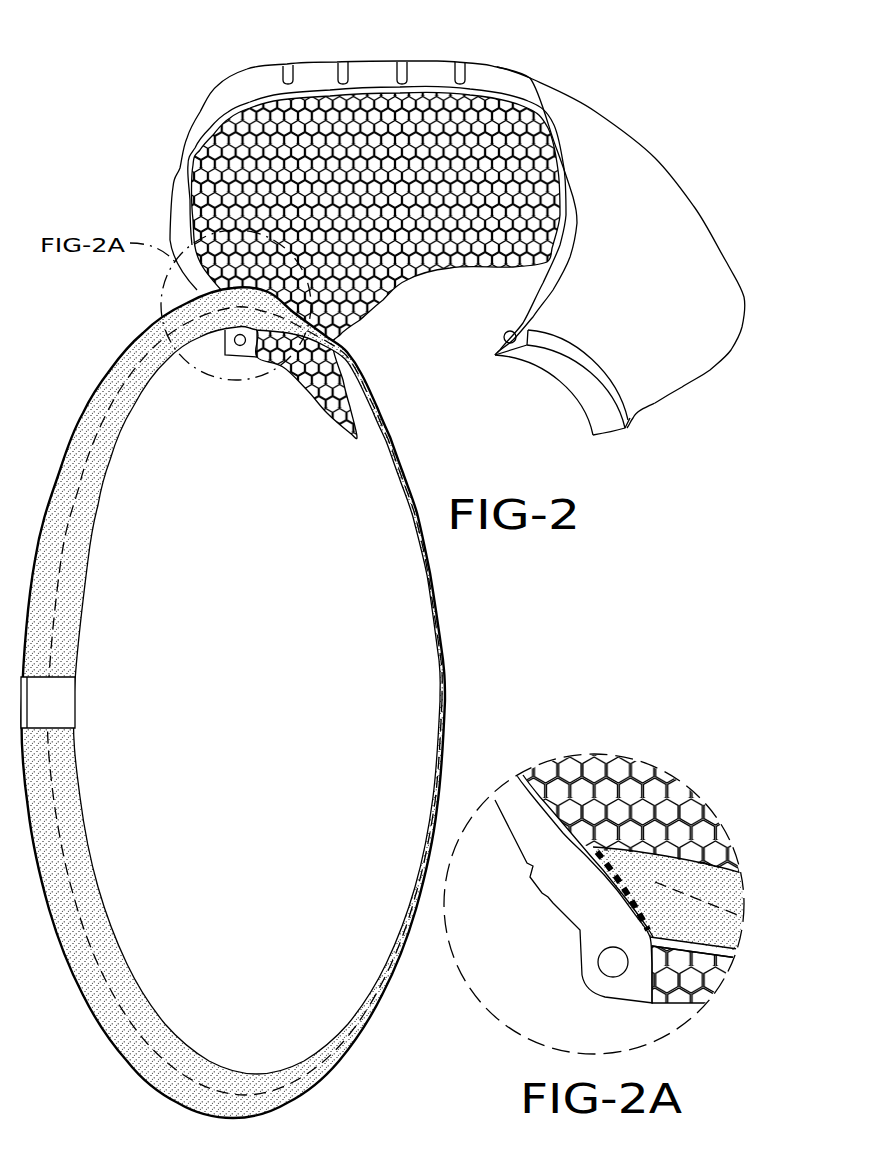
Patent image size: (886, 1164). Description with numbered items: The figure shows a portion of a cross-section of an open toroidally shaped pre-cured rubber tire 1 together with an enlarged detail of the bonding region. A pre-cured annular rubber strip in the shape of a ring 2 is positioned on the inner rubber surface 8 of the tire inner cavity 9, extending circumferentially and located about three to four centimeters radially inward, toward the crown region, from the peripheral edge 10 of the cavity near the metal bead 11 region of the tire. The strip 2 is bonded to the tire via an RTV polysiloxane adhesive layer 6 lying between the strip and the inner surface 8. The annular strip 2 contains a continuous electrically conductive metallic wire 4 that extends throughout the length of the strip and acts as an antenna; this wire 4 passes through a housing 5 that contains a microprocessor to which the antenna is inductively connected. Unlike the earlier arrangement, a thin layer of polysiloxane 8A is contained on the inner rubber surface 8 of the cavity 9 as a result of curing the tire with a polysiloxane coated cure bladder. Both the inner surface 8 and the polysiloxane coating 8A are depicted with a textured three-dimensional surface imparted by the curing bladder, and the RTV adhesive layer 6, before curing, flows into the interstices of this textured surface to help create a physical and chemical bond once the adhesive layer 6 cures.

In FIG. 2, the pre-cured rubber tire 1 is at (622, 103).
In FIG. 2, the pre-cured annular rubber strip 2 is at (157, 1042).
In FIG. 2A, the pre-cured annular rubber strip 2 is at (660, 885).
In FIG. 2, the electrically conductive metallic wire 4 is at (57, 597).
In FIG. 2A, the electrically conductive metallic wire 4 is at (625, 890).
In FIG. 2, the housing 5 is at (55, 706).
In FIG. 2, the RTV polysiloxane adhesive layer 6 is at (352, 1022).
In FIG. 2A, the RTV polysiloxane adhesive layer 6 is at (630, 905).
In FIG. 2, the inner rubber surface 8 is at (197, 192).
In FIG. 2A, the inner rubber surface 8 is at (520, 782).
In FIG. 2, the polysiloxane coating 8A is at (220, 136).
In FIG. 2A, the polysiloxane coating 8A is at (560, 836).
In FIG. 2, the tire inner cavity 9 is at (416, 311).
In FIG. 2, the peripheral edge 10 is at (325, 362).
In FIG. 2A, the peripheral edge 10 is at (673, 1007).
In FIG. 2, the metal bead 11 is at (510, 348).
In FIG. 2A, the metal bead 11 is at (616, 972).